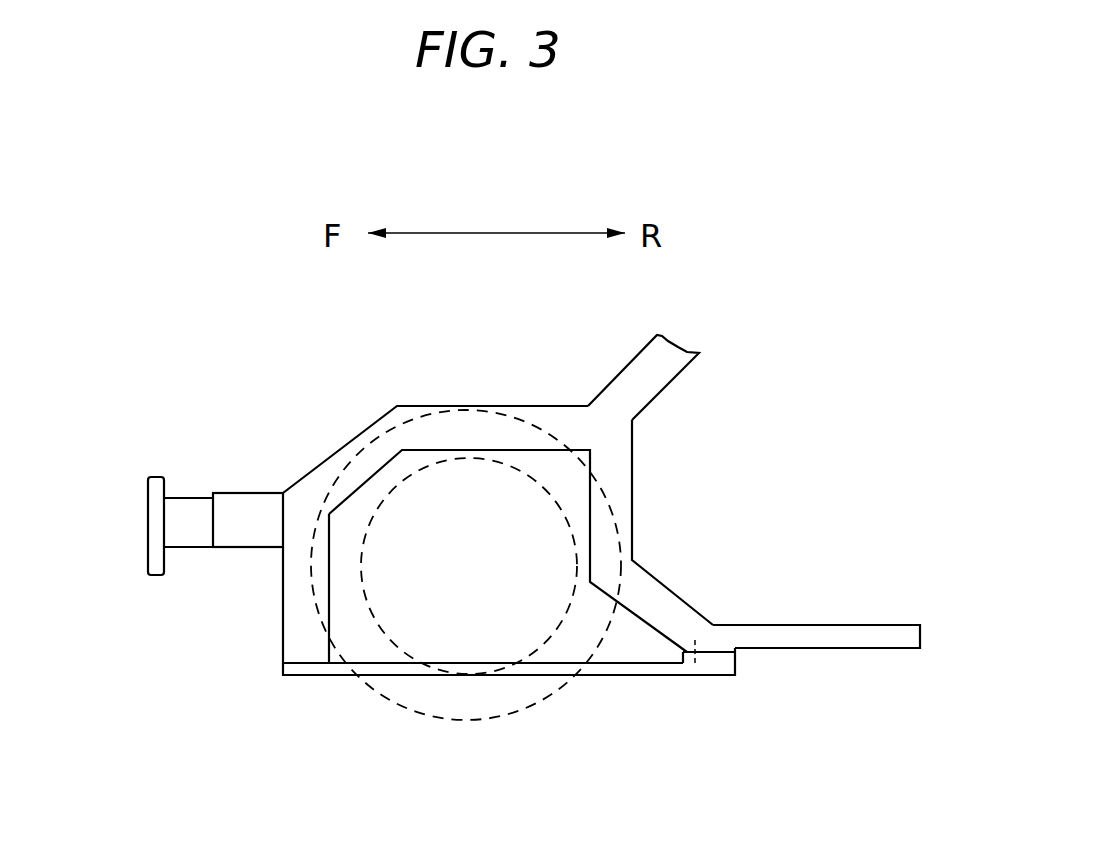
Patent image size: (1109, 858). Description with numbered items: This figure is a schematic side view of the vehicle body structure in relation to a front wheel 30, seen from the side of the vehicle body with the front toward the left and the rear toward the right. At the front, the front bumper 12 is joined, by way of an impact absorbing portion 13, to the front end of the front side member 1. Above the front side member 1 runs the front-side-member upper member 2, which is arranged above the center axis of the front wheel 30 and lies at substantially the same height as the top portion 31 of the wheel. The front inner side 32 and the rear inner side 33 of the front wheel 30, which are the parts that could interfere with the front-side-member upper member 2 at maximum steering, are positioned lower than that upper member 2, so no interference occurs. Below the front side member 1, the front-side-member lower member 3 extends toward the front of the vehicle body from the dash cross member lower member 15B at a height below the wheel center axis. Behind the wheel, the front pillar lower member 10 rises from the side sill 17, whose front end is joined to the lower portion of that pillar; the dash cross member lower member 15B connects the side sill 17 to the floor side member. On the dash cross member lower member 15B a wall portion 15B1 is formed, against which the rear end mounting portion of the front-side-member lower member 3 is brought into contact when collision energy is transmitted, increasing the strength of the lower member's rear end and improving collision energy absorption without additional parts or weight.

The front side member 1 is at (248, 503).
The front-side-member upper member 2 is at (413, 406).
The front-side-member lower member 3 is at (553, 665).
The front pillar lower member 10 is at (655, 369).
The front bumper 12 is at (148, 510).
The impact absorbing portion 13 is at (190, 522).
The side sill 17 is at (780, 648).
The front wheel 30 is at (448, 732).
The top portion of the front wheel 31 is at (497, 417).
The front inner side of the front wheel 32 is at (310, 580).
The rear inner side of the front wheel 33 is at (640, 562).
The dash cross member lower member 15B is at (725, 672).
The wall portion 15B1 is at (707, 668).